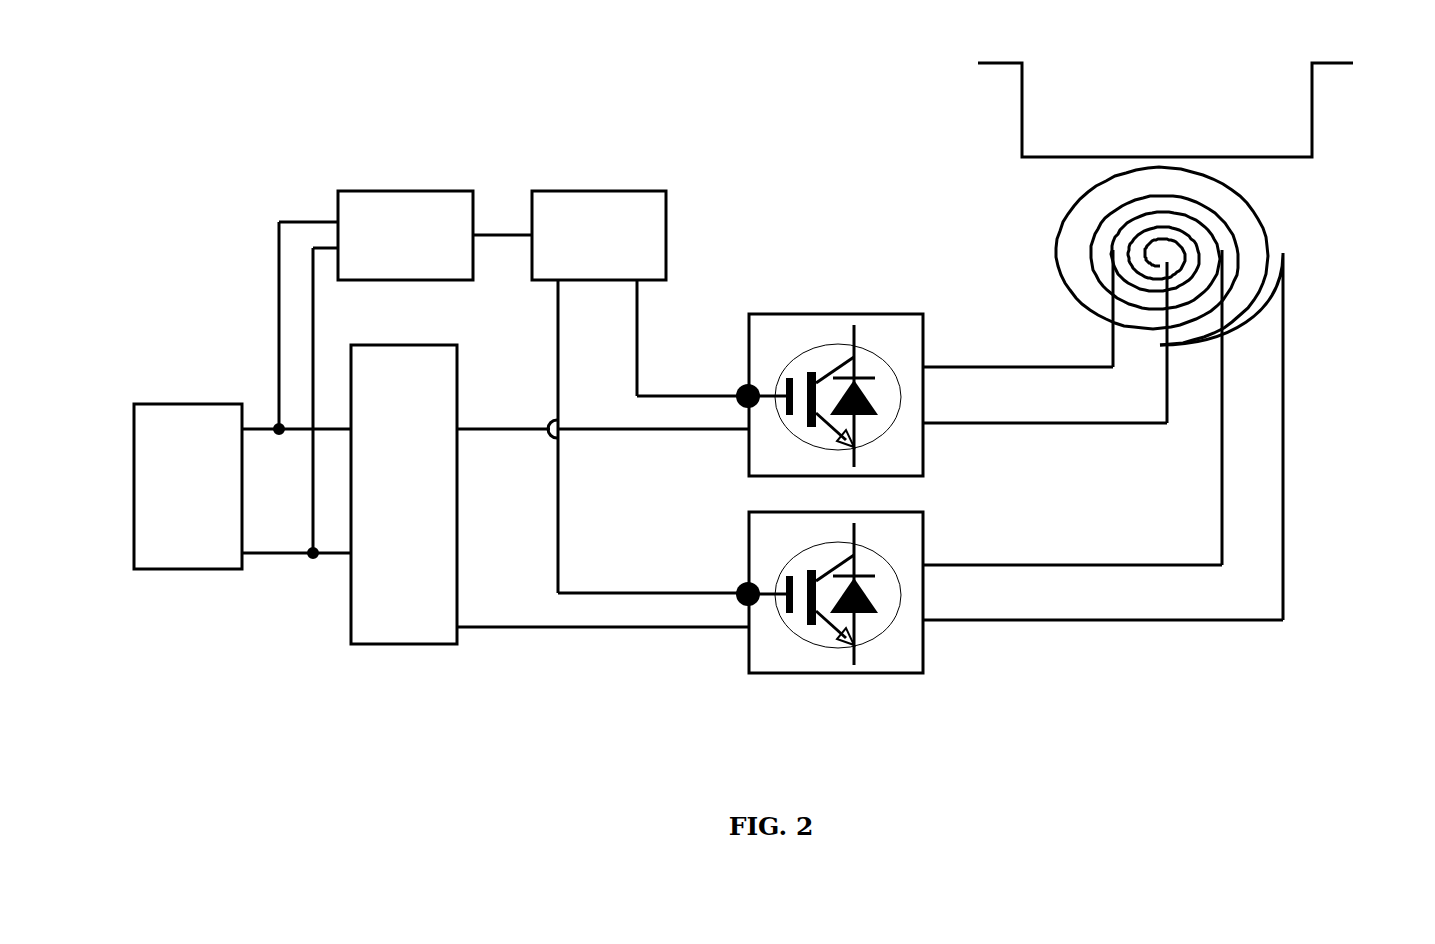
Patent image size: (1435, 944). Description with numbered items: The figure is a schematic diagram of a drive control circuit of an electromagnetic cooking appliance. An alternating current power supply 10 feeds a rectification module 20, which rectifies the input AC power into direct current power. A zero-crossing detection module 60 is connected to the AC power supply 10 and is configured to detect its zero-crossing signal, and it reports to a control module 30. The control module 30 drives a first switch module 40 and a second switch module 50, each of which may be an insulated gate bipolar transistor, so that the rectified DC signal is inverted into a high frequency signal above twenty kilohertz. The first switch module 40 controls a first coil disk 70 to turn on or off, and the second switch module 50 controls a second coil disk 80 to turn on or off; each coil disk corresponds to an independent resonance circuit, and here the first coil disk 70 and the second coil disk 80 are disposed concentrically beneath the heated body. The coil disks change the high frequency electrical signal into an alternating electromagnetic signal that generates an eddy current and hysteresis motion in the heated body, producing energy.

The alternating current (AC) power supply 10 is at (182, 404).
The rectification module 20 is at (392, 345).
The control module 30 is at (607, 190).
The first switch module 40 is at (826, 314).
The second switch module 50 is at (827, 676).
The zero-crossing detection module 60 is at (418, 190).
The first coil disk 70 is at (1112, 250).
The second coil disk 80 is at (1297, 275).